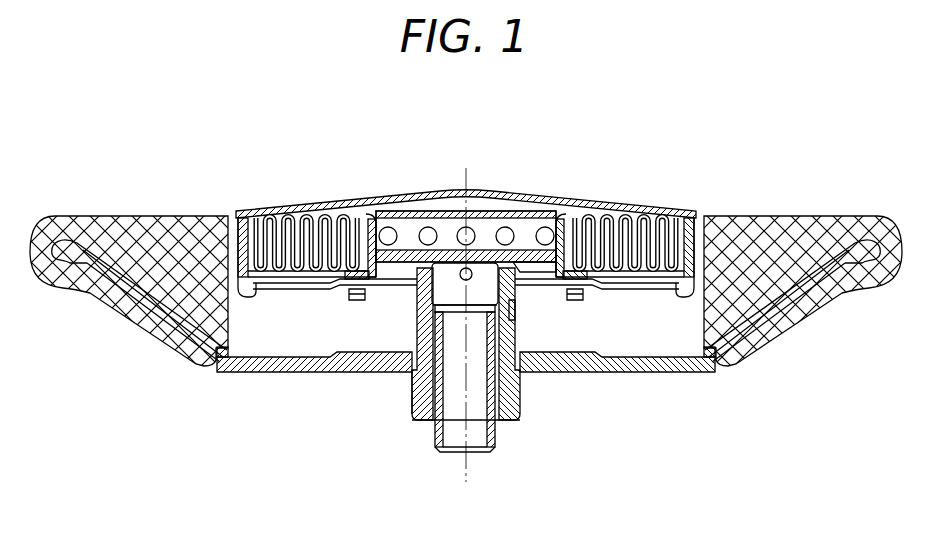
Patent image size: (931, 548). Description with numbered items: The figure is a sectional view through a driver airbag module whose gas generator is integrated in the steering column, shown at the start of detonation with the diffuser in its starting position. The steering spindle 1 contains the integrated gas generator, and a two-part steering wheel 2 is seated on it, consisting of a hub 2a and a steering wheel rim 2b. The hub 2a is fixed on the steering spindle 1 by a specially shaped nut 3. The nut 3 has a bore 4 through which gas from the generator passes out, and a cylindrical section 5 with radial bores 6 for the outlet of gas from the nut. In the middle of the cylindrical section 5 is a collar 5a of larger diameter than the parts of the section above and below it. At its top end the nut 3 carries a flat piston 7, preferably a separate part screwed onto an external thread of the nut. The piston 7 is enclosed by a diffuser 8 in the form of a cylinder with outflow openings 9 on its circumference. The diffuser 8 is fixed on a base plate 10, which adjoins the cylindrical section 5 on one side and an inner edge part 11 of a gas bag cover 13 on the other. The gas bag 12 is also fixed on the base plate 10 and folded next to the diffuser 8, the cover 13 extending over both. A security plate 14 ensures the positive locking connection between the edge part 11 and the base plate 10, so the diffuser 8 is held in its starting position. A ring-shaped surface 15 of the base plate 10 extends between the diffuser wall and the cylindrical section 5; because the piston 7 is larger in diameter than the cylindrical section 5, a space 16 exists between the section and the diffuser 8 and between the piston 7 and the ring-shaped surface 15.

The steering spindle 1 is at (493, 450).
The steering wheel 2 is at (178, 196).
The hub 2a is at (510, 397).
The steering wheel rim 2b is at (762, 240).
The nut 3 is at (425, 341).
The bore 4 is at (442, 293).
The cylindrical section 5 is at (512, 297).
The collar 5a is at (520, 322).
The radial bores 6 is at (417, 272).
The piston 7 is at (394, 226).
The diffuser 8 is at (437, 224).
The outflow openings 9 is at (510, 230).
The base plate 10 is at (292, 278).
The inner edge part 11 is at (233, 215).
The gas bag 12 is at (643, 240).
The gas bag cover 13 is at (249, 199).
The security plate 14 is at (320, 289).
The ring-shaped surface 15 is at (532, 287).
The space 16 is at (536, 273).